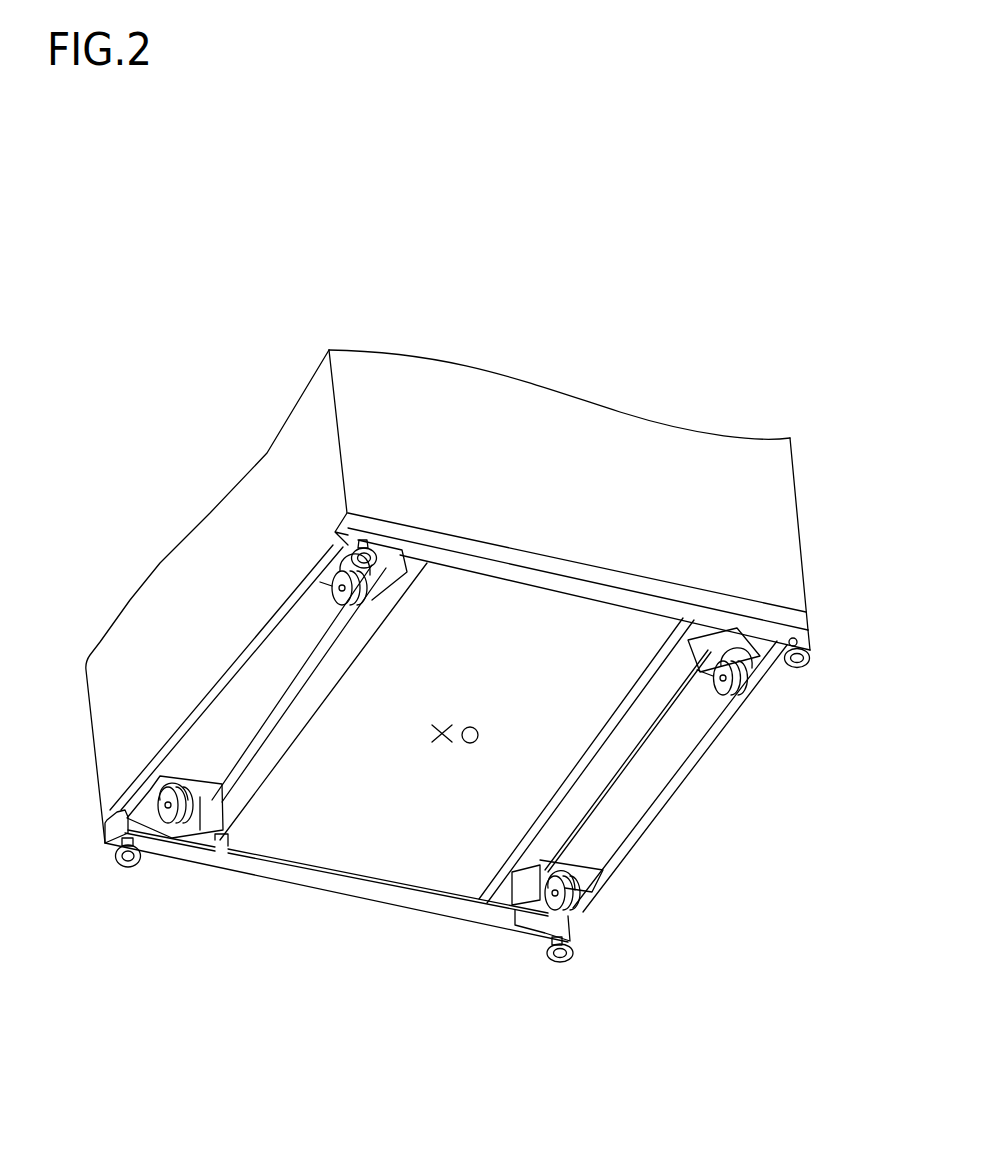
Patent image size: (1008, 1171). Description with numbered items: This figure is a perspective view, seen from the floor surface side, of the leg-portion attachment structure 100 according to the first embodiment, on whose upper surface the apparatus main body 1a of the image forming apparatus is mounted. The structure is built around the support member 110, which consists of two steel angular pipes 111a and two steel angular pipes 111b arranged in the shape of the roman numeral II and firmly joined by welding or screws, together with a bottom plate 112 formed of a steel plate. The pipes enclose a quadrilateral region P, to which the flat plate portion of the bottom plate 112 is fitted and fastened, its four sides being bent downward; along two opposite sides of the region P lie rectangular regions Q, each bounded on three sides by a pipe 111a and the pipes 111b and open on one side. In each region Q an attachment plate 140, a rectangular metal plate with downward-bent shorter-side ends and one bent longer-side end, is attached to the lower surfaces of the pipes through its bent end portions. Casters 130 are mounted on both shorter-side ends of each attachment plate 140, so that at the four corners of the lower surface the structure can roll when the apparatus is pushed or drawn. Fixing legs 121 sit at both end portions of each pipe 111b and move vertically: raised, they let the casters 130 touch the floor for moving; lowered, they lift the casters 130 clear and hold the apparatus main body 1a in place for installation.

The apparatus main body 1a is at (792, 474).
The leg-portion attachment structure 100 is at (88, 773).
The support member 110 is at (388, 967).
The angular pipe 111a is at (620, 748).
The angular pipe 111b is at (732, 597).
The bottom plate 112 is at (383, 852).
The fixing leg 121 is at (352, 541).
The caster 130 is at (333, 580).
The attachment plate 140 is at (227, 717).
The region P is at (470, 807).
The region Q is at (270, 667).